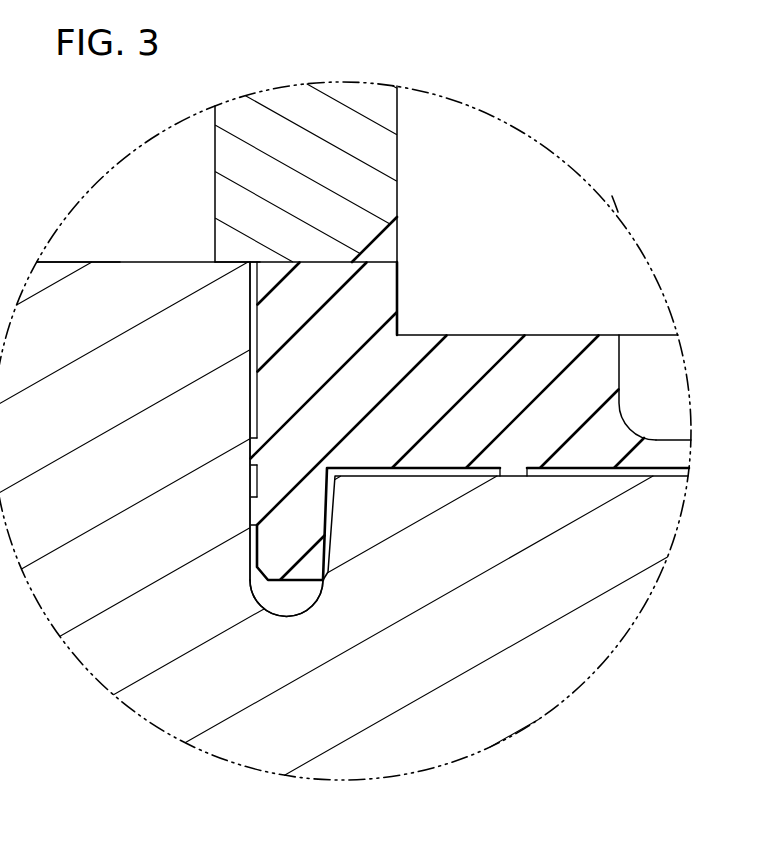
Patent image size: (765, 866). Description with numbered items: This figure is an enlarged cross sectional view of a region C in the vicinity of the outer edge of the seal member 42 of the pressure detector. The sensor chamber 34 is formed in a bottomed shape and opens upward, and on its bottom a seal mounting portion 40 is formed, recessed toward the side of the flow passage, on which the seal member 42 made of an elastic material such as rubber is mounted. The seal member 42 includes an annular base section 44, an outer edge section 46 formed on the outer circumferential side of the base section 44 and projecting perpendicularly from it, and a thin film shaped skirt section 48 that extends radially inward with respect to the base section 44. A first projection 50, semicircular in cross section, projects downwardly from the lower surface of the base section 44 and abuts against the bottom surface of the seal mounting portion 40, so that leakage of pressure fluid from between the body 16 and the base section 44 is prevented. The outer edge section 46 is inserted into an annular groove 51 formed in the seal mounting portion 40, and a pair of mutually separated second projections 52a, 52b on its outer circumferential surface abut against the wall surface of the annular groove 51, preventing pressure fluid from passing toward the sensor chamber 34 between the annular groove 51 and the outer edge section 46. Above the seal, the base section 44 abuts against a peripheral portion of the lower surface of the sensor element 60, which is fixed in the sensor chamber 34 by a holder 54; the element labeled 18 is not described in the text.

The body 16 is at (363, 736).
The cover member 18 is at (494, 172).
The sensor chamber 34 is at (122, 205).
The seal mounting portion 40 is at (258, 306).
The seal member 42 is at (663, 364).
The base section 44 is at (529, 350).
The outer edge section 46 is at (282, 337).
The skirt section 48 is at (668, 452).
The first projection 50 is at (515, 477).
The annular groove 51 is at (270, 611).
The second projection 52a is at (250, 452).
The second projection 52b is at (250, 515).
The holder 54 is at (323, 113).
The sensor element 60 is at (614, 248).
The region C is at (607, 206).